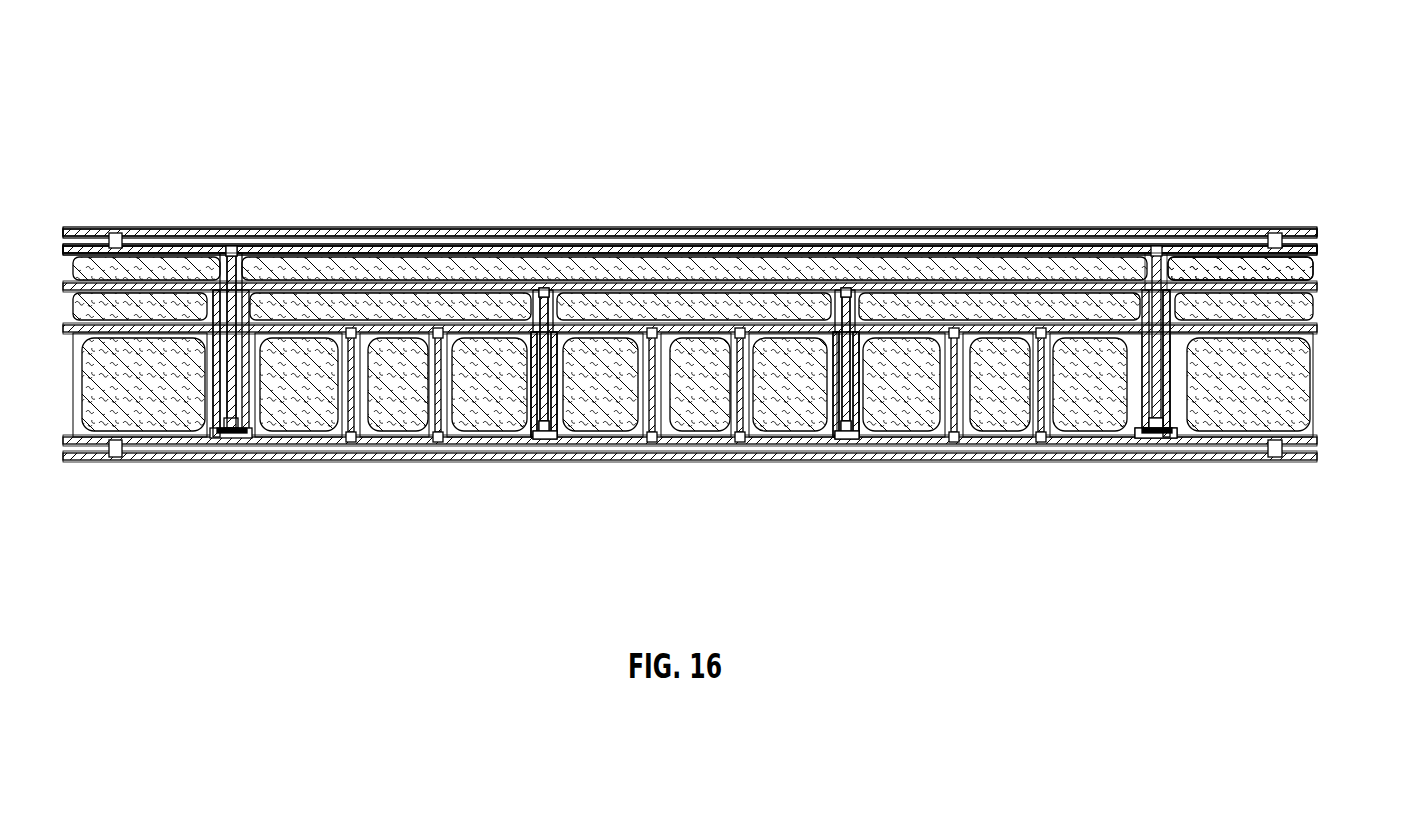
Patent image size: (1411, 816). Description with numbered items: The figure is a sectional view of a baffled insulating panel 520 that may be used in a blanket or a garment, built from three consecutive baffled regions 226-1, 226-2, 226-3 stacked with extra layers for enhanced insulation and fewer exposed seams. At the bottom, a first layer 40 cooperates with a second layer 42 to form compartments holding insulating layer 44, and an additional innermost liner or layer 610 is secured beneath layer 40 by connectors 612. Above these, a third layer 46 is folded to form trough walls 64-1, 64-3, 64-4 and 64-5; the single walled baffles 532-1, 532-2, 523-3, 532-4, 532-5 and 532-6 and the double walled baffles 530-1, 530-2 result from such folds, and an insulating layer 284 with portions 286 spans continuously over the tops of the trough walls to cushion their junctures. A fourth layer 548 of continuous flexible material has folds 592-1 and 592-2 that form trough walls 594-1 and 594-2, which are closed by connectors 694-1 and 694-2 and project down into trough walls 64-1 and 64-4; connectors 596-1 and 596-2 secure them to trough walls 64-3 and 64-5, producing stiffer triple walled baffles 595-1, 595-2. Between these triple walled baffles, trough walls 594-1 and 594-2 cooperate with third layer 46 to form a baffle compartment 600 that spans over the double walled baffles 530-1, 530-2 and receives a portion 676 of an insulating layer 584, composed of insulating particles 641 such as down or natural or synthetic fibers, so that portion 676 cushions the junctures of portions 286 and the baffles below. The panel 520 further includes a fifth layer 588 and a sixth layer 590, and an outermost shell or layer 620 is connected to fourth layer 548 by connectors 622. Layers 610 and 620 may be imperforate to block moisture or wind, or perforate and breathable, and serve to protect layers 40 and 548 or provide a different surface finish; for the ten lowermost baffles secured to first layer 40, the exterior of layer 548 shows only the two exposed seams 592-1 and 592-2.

The baffled insulating panel 520 is at (720, 338).
The fourth layer 548 is at (1305, 237).
The portion of insulating layer 676 is at (703, 250).
The insulating layer 284 is at (62, 305).
The second layer 42 is at (75, 332).
The sixth layer 590 is at (1262, 460).
The first layer 40 is at (1300, 455).
The outermost layer 620 is at (82, 228).
The baffle compartment 600 is at (893, 243).
The fifth layer 588 is at (1178, 240).
The insulating particles 641 is at (680, 260).
The insulating layer 584 is at (1338, 267).
The third layer 46 is at (1320, 270).
The portions of insulating layer 286 is at (455, 300).
The insulating layer 44 is at (66, 400).
The innermost layer 610 is at (150, 425).
The baffled region 226-1 is at (421, 448).
The baffled region 226-2 is at (763, 448).
The baffled region 226-3 is at (1062, 448).
The connector 694-1 is at (231, 248).
The trough wall 594-1 is at (214, 292).
The fold 592-1 is at (248, 292).
The trough wall 64-3 is at (250, 432).
The connector 596-1 is at (198, 420).
The triple walled baffle 595-1 is at (203, 393).
The connector 694-2 is at (1156, 248).
The fold 592-2 is at (1145, 300).
The trough wall 594-2 is at (1170, 300).
The trough wall 64-5 is at (1197, 420).
The connector 596-2 is at (1137, 425).
The triple walled baffle 595-2 is at (1190, 366).
The double walled baffle 530-1 is at (527, 437).
The trough wall 64-1 is at (620, 423).
The double walled baffle 530-2 is at (830, 437).
The trough wall 64-4 is at (864, 405).
The single walled baffle 532-1 is at (340, 423).
The single walled baffle 532-2 is at (418, 417).
The short strut 523-3 is at (640, 425).
The single walled baffle 532-4 is at (730, 407).
The single walled baffle 532-5 is at (923, 423).
The single walled baffle 532-6 is at (1033, 410).
The connectors 622 is at (118, 233).
The connectors 612 is at (112, 458).